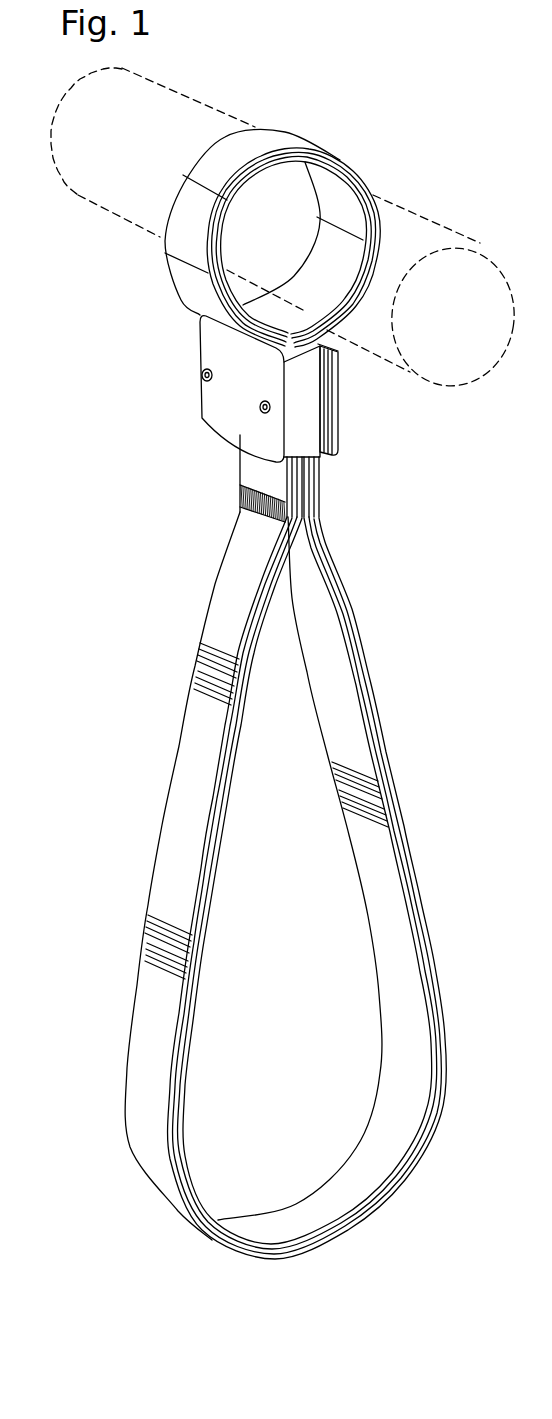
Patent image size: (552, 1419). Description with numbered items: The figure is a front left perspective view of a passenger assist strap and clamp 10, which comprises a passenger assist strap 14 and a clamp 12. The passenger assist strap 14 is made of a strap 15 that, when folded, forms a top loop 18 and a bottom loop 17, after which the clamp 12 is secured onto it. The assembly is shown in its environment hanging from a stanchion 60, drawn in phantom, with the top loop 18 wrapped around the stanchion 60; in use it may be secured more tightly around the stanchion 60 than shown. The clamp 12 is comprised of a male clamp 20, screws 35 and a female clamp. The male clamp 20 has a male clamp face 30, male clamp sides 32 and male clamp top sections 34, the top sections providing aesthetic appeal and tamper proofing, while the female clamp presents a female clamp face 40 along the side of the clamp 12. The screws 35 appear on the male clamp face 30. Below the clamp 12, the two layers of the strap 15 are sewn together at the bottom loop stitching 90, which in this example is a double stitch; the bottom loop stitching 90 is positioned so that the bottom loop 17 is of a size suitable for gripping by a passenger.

The passenger assist strap and clamp 10 is at (292, 105).
The clamp 12 is at (261, 412).
The passenger assist strap 14 is at (244, 847).
The strap 15 is at (345, 680).
The bottom loop 17 is at (128, 987).
The top loop 18 is at (158, 261).
The male clamp 20 is at (261, 412).
The male clamp face 30 is at (232, 413).
The male clamp sides 32 is at (303, 430).
The male clamp top sections 34 is at (327, 357).
The screws 35 is at (185, 391).
The female clamp face 40 is at (340, 413).
The stanchion 60 is at (487, 270).
The bottom loop stitching 90 is at (233, 520).